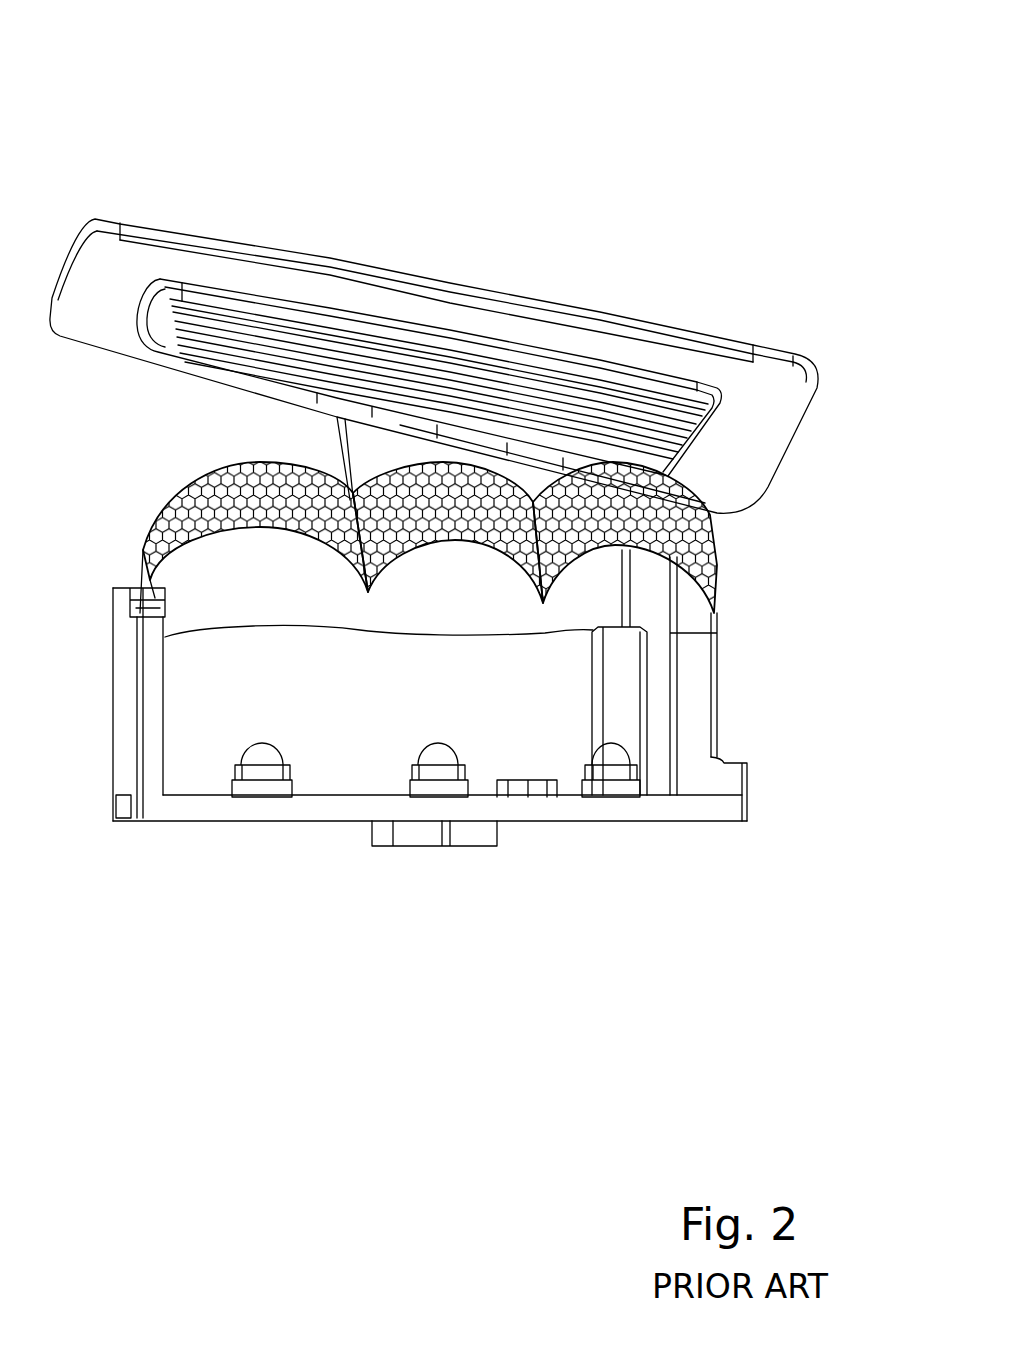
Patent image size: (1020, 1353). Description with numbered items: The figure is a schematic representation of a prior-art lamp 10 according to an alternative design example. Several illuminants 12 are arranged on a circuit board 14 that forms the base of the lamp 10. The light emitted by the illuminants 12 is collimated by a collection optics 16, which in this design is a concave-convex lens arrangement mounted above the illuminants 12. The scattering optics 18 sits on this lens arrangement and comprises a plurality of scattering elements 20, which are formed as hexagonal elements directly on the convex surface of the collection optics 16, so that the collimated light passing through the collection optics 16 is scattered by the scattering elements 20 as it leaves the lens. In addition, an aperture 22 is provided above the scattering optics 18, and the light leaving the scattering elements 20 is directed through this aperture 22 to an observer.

The lamp 10 is at (692, 92).
The illuminants 12 is at (253, 760).
The circuit board 14 is at (314, 820).
The collection optics 16 is at (278, 598).
The scattering optics 18 is at (140, 486).
The scattering elements 20 is at (178, 512).
The aperture 22 is at (405, 306).